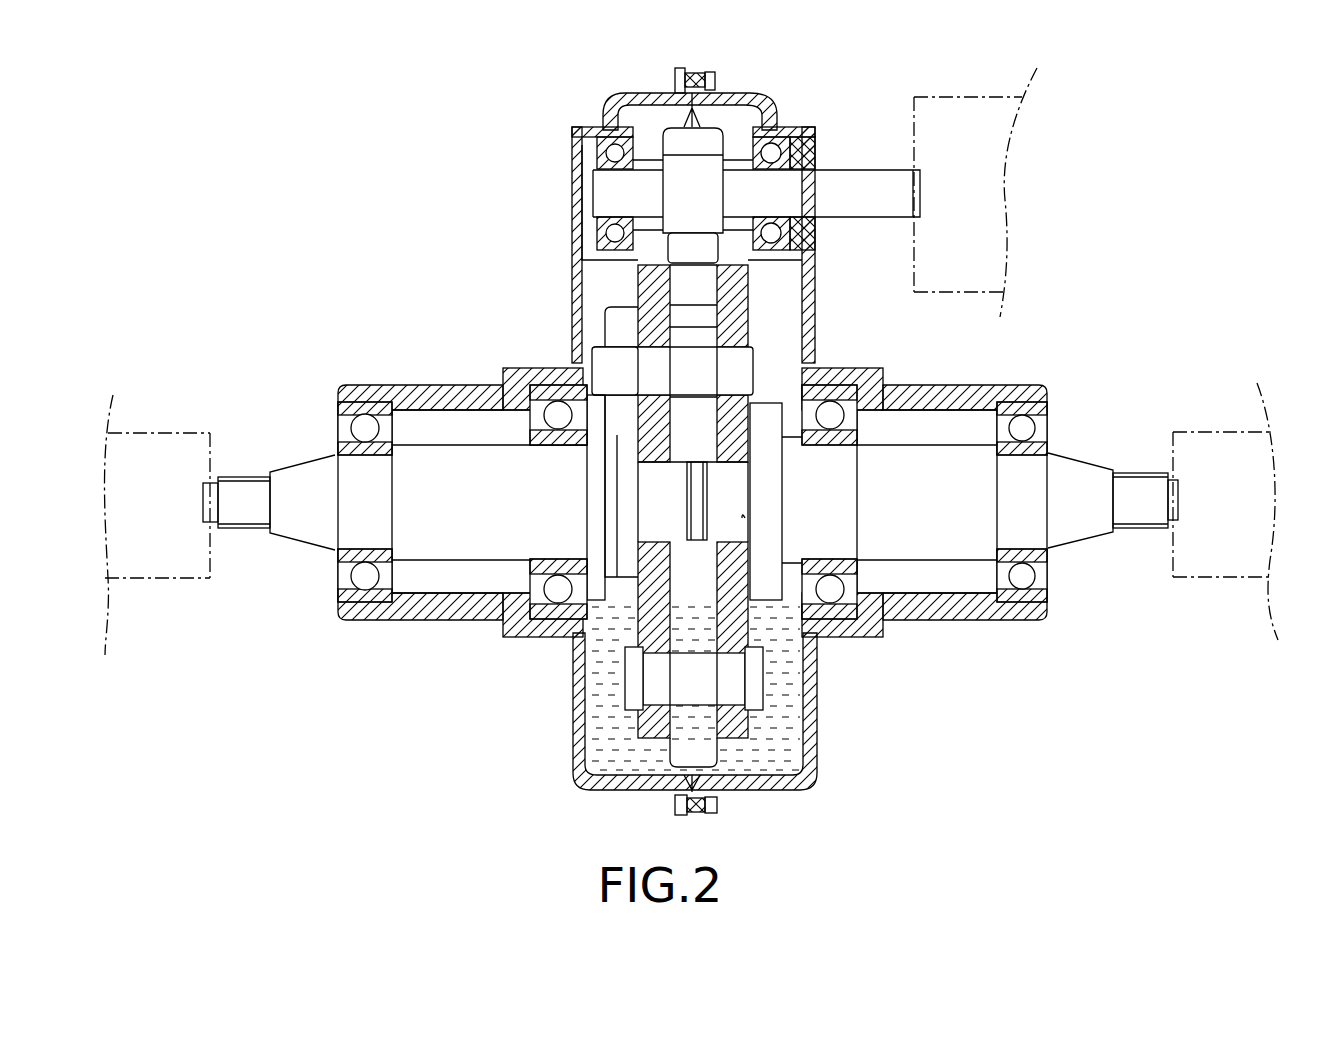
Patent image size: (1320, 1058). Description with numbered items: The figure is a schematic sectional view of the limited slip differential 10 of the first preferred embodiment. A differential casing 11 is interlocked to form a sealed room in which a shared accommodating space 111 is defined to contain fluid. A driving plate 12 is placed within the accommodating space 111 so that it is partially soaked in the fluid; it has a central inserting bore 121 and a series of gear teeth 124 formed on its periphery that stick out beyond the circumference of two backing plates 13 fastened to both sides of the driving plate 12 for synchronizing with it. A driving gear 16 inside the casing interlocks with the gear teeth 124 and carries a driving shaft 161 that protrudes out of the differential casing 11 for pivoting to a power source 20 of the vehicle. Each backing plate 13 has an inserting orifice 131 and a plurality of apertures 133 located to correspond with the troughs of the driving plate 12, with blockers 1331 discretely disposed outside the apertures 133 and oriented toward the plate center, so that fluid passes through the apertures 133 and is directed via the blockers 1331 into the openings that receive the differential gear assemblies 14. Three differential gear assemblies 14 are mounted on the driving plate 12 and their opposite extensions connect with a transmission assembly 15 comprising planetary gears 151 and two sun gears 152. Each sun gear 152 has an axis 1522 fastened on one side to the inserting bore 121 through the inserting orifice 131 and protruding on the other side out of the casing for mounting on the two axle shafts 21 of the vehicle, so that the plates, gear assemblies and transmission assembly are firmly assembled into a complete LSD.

The limited slip differential 10 is at (212, 214).
The differential casing 11 is at (578, 155).
The accommodating space 111 is at (780, 760).
The driving plate 12 is at (766, 505).
The inserting bore 121 is at (745, 530).
The gear teeth 124 is at (690, 243).
The backing plate 13 is at (674, 541).
The inserting orifice 131 is at (742, 518).
The aperture 133 is at (655, 700).
The blocker 1331 is at (630, 672).
The differential gear assembly 14 is at (697, 380).
The transmission assembly 15 is at (588, 340).
The planetary gear 151 is at (612, 310).
The sun gear 152 is at (607, 465).
The axis 1522 is at (430, 545).
The driving gear 16 is at (710, 173).
The driving shaft 161 is at (790, 187).
The power source 20 is at (957, 127).
The axle shaft 21 is at (1208, 470).